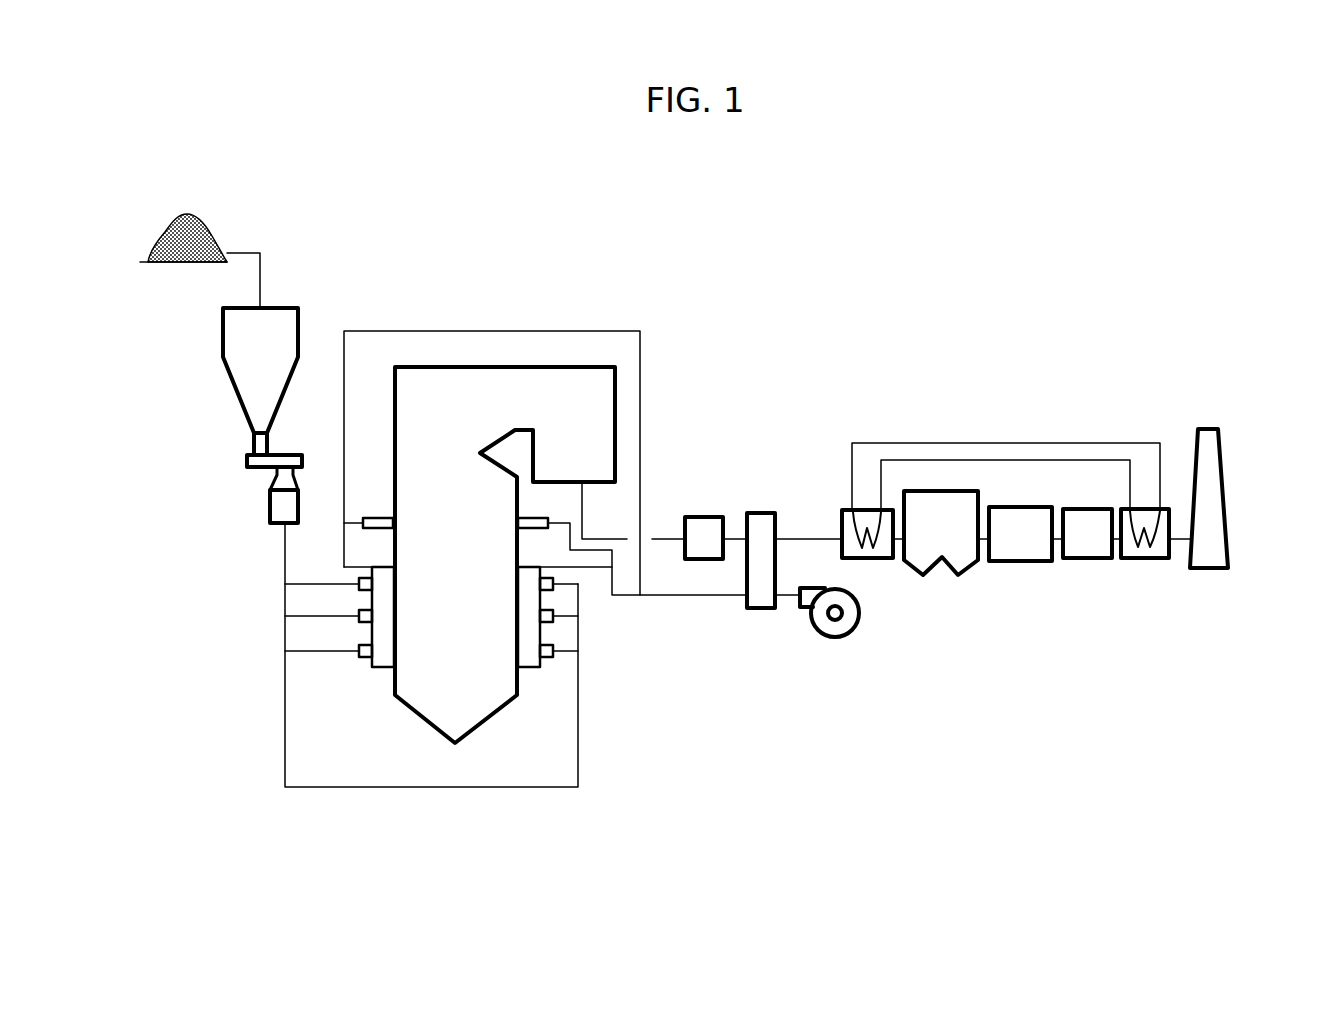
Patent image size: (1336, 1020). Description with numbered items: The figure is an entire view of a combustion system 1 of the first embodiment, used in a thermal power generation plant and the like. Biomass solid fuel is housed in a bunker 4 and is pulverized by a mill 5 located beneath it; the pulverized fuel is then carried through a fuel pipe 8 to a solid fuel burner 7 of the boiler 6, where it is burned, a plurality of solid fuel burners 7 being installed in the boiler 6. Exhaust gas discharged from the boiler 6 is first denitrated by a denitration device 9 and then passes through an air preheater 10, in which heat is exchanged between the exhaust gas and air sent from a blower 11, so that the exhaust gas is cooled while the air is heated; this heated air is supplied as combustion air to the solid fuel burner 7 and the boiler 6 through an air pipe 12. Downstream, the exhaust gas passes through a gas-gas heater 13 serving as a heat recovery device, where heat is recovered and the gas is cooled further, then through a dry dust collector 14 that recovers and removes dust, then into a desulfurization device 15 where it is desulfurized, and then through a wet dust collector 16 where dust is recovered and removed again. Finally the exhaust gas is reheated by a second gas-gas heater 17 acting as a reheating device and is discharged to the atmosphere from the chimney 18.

The combustion system 1 is at (718, 251).
The bunker 4 is at (278, 305).
The mill 5 is at (268, 500).
The boiler 6 is at (548, 367).
The solid fuel burner 7 is at (359, 617).
The fuel pipe 8 is at (285, 735).
The denitration device 9 is at (708, 516).
The air preheater 10 is at (758, 610).
The blower 11 is at (835, 638).
The air pipe 12 is at (640, 383).
The gas-gas heater (heat recovery device) 13 is at (873, 560).
The dry dust collector 14 is at (963, 577).
The desulfurization device 15 is at (1020, 561).
The wet dust collector 16 is at (1088, 560).
The gas-gas heater (reheating device) 17 is at (1148, 560).
The chimney 18 is at (1222, 453).